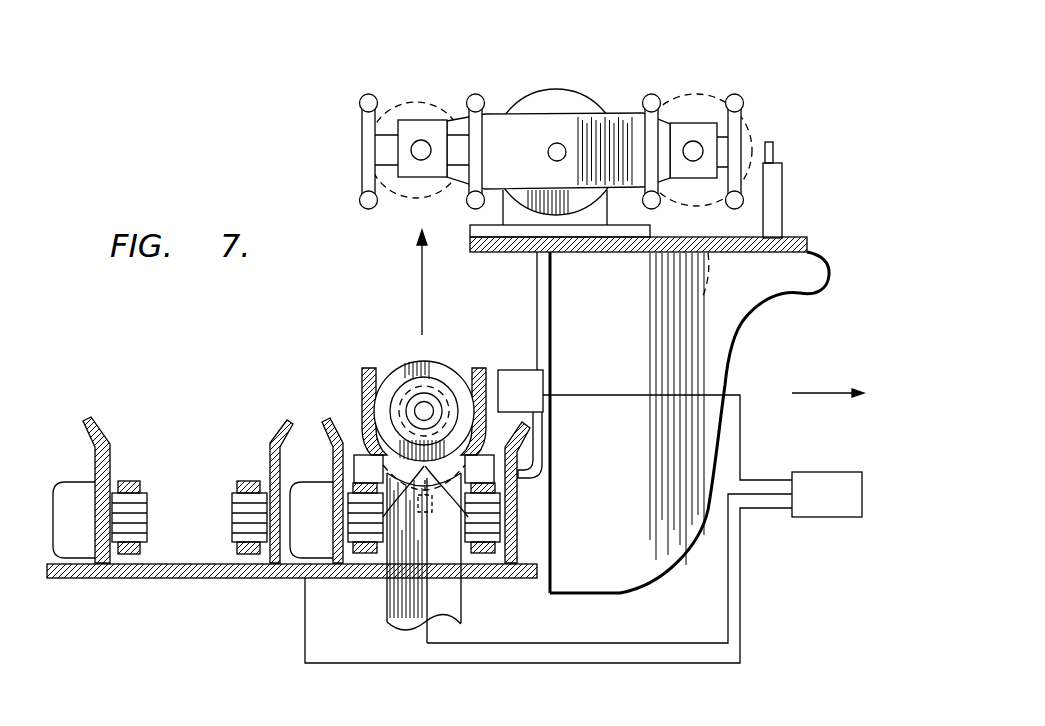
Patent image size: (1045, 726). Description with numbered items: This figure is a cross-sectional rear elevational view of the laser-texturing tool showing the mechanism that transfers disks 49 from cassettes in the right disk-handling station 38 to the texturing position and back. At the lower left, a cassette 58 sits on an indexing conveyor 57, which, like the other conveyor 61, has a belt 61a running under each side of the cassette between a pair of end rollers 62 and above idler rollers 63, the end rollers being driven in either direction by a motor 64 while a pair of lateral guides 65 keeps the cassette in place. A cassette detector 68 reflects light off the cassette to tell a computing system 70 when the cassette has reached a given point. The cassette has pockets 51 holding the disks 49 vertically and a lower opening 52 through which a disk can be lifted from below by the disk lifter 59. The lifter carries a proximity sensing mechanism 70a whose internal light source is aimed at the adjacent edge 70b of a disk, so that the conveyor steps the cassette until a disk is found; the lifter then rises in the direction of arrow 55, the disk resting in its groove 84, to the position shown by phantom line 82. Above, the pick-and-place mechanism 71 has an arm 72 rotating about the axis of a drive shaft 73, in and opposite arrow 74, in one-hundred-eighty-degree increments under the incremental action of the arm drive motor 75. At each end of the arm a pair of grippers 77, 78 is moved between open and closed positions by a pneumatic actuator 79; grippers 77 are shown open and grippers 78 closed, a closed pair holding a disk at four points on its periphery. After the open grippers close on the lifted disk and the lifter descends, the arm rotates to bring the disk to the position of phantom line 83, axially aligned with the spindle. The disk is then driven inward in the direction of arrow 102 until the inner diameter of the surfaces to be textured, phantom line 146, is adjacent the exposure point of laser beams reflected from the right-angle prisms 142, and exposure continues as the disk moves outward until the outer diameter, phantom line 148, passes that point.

The right disk-handling station 38 is at (232, 350).
The disk 49 is at (411, 363).
The pocket 51 is at (385, 368).
The lower opening 52 is at (467, 507).
The arrow 55 is at (421, 312).
The indexing conveyor 57 is at (490, 565).
The cassette 58 is at (478, 362).
The disk lifter 59 is at (432, 603).
The conveyor 61 is at (136, 475).
The belt 61a is at (368, 554).
The end roller 62 is at (358, 548).
The idler roller 63 is at (366, 518).
The motor 64 is at (305, 482).
The lateral guide 65 is at (322, 423).
The cassette detector 68 is at (510, 369).
The computing system 70 is at (853, 472).
The proximity sensing mechanism 70a is at (432, 512).
The edge 70b is at (468, 530).
The pick-and-place mechanism 71 is at (516, 218).
The arm 72 is at (622, 114).
The drive shaft 73 is at (558, 160).
The arrow 74 is at (505, 95).
The arm drive motor 75 is at (575, 190).
The grippers 77 is at (362, 96).
The grippers 78 is at (649, 96).
The pneumatic actuator 79 is at (452, 124).
The phantom line 82 is at (407, 98).
The phantom line 83 is at (684, 409).
The groove 84 is at (360, 430).
The arrow 102 is at (827, 392).
The right-angle prism 142 is at (773, 153).
The phantom line 146 is at (436, 403).
The phantom line 148 is at (500, 445).